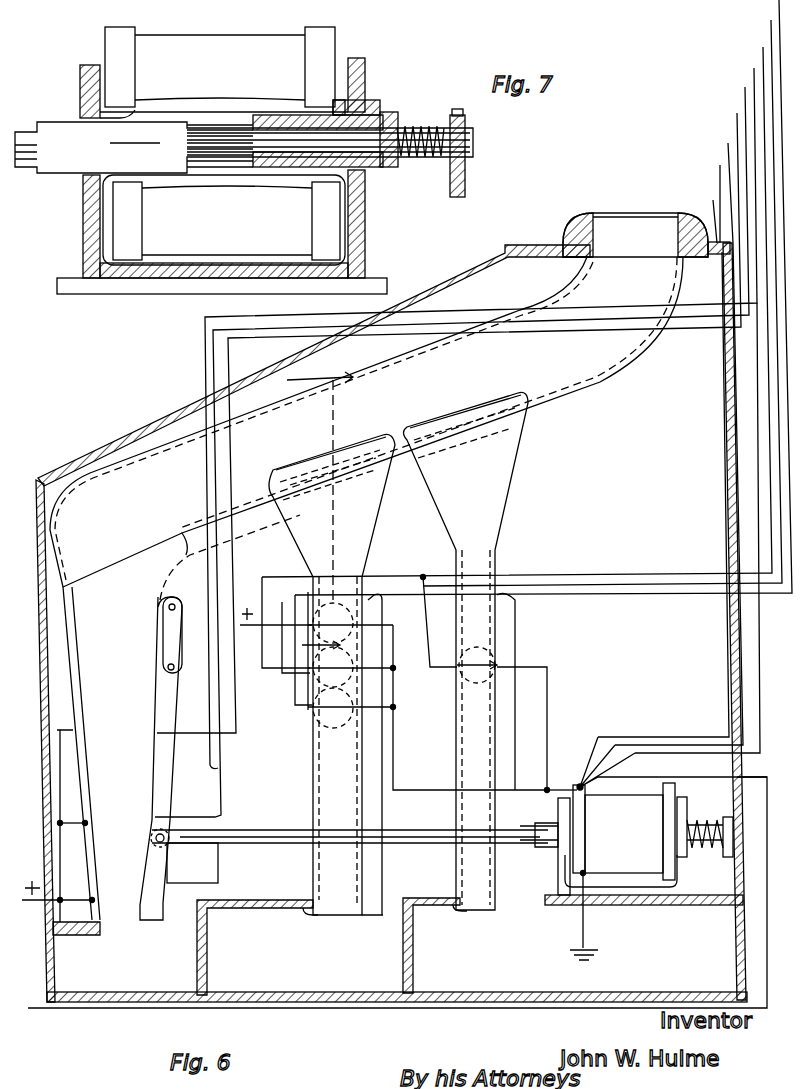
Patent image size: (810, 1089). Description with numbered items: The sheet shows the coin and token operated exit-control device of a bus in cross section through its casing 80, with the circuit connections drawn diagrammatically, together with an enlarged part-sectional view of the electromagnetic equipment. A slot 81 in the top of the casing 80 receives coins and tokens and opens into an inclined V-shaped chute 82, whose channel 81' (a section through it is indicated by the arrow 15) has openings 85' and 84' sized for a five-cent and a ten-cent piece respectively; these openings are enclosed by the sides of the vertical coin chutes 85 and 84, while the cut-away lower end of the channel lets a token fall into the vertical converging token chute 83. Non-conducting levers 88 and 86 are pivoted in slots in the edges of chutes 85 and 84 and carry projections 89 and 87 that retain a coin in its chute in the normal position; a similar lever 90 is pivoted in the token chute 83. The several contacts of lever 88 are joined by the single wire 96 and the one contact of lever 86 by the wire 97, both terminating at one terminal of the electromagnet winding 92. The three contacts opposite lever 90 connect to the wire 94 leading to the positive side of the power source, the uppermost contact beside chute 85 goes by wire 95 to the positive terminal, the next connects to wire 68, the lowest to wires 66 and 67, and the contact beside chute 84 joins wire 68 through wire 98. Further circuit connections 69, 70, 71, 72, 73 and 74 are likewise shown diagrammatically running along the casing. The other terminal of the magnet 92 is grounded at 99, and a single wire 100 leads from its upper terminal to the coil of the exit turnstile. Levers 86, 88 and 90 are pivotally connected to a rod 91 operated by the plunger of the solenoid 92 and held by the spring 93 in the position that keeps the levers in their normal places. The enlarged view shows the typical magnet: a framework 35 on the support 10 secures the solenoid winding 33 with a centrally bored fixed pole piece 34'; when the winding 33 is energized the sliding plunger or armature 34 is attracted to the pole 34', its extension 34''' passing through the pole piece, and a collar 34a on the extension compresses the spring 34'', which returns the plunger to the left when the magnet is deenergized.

In FIG. 7, the support 10 is at (388, 280).
In FIG. 7, the solenoid winding 33 is at (222, 143).
In FIG. 7, the sliding plunger 34 is at (244, 130).
In FIG. 7, the fixed internal pole piece 34' is at (320, 160).
In FIG. 7, the collar 34a is at (383, 120).
In FIG. 7, the spring 34'' is at (420, 126).
In FIG. 7, the plunger extension 34''' is at (492, 153).
In FIG. 7, the frame work 35 is at (365, 212).
In FIG. 6, the direction arrow 15 is at (320, 512).
In FIG. 6, the wire 66 is at (760, 55).
In FIG. 6, the wire 67 is at (614, 612).
In FIG. 6, the wire 68 is at (768, 30).
In FIG. 6, the conductor 69 is at (752, 68).
In FIG. 6, the conductor 70 is at (744, 92).
In FIG. 6, the conductor 71 is at (736, 118).
In FIG. 6, the conductor 72 is at (727, 148).
In FIG. 6, the conductor 73 is at (719, 170).
In FIG. 6, the conductor 74 is at (713, 210).
In FIG. 6, the casing 80 is at (175, 422).
In FIG. 6, the slot 81 is at (646, 223).
In FIG. 6, the inclined V-shaped channel 81' is at (341, 473).
In FIG. 6, the inclined V-shaped chute 82 is at (628, 362).
In FIG. 6, the vertical converging token chute 83 is at (70, 650).
In FIG. 6, the coin chute 84 is at (481, 651).
In FIG. 6, the opening 84' is at (465, 396).
In FIG. 6, the coin chute 85 is at (342, 674).
In FIG. 6, the opening 85' is at (331, 449).
In FIG. 6, the non-conducting lever 86 is at (517, 638).
In FIG. 6, the projection 87 is at (484, 685).
In FIG. 6, the non-conducting lever 88 is at (372, 770).
In FIG. 6, the projection 89 is at (362, 727).
In FIG. 6, the non-conducting lever 90 is at (160, 775).
In FIG. 6, the rod 91 is at (255, 843).
In FIG. 6, the electro-magnetic solenoid 92 is at (657, 816).
In FIG. 6, the spring 93 is at (712, 818).
In FIG. 6, the wire 94 is at (30, 902).
In FIG. 6, the wire 95 is at (250, 627).
In FIG. 6, the wire 96 is at (412, 793).
In FIG. 6, the wire 97 is at (549, 705).
In FIG. 6, the wire 98 is at (430, 672).
In FIG. 6, the ground 99 is at (596, 952).
In FIG. 6, the wire 100 is at (92, 1010).